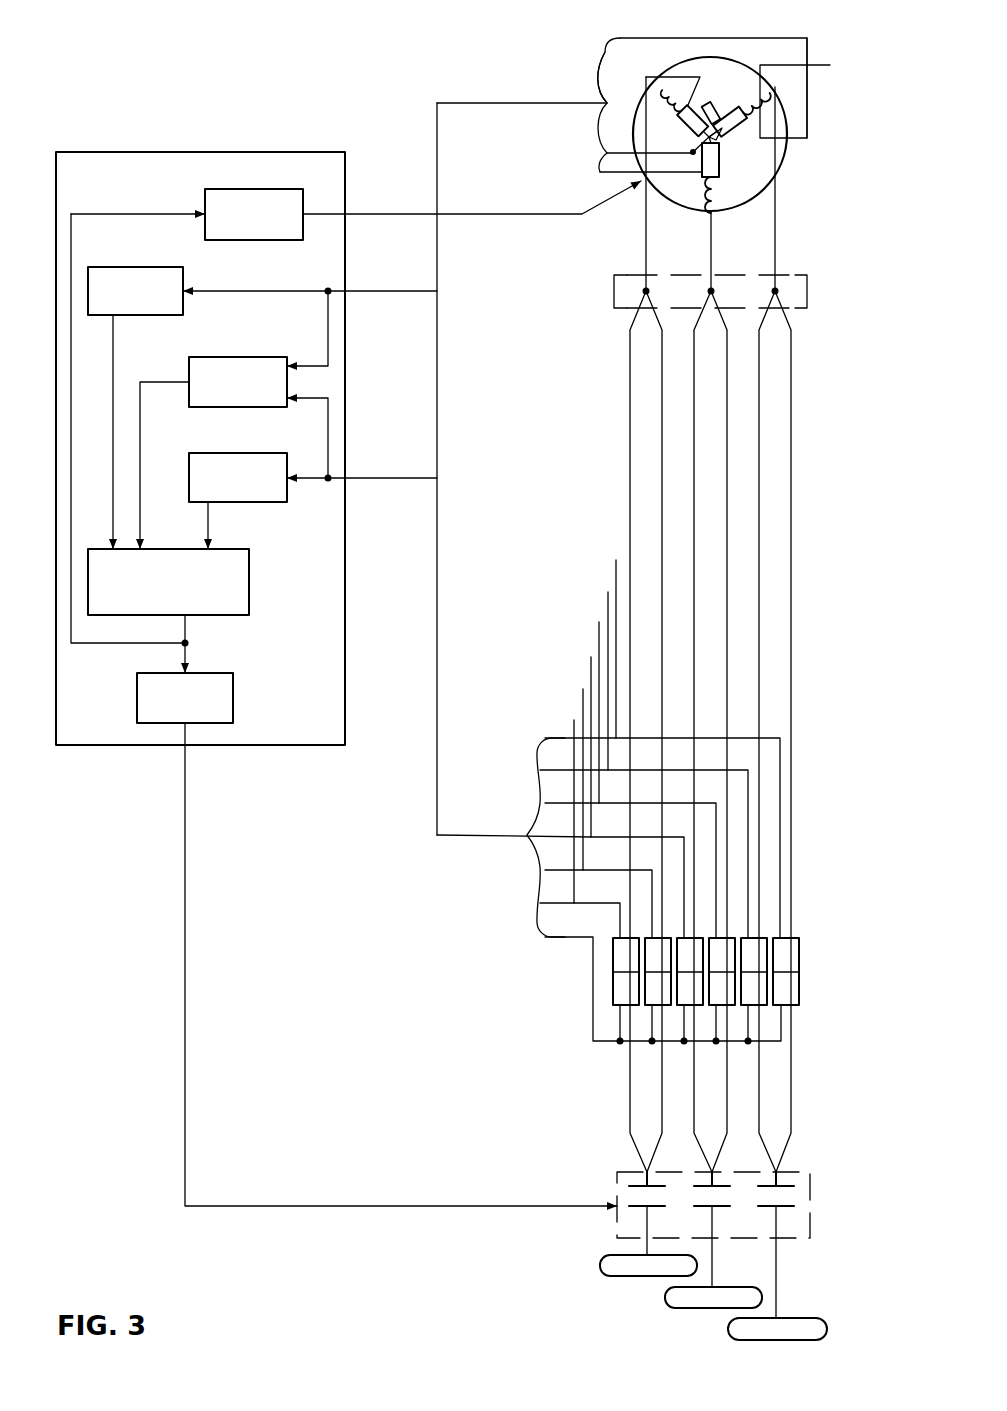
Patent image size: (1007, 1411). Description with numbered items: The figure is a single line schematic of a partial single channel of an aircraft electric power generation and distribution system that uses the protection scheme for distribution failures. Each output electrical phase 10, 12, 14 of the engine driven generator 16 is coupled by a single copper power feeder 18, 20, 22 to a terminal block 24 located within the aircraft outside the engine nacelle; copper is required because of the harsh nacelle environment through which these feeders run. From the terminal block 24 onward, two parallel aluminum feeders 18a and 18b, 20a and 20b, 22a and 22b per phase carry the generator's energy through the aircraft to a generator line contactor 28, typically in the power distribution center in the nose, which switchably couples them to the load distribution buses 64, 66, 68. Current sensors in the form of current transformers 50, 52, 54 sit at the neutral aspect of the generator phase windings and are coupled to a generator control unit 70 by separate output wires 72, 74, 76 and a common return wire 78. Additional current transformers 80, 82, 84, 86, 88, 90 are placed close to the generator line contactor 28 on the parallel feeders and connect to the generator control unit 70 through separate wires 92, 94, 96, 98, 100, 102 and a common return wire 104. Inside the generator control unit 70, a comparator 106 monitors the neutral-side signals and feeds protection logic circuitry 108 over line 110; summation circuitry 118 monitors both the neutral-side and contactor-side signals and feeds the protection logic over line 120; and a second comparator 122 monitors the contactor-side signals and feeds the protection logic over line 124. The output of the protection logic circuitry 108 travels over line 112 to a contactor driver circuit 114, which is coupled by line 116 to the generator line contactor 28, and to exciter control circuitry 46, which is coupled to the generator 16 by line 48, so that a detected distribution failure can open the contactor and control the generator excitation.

The output electrical phase 10 is at (651, 436).
The output electrical phase 12 is at (702, 107).
The output electrical phase 14 is at (785, 202).
The engine driven generator 16 is at (830, 143).
The copper power feeder 18 is at (640, 250).
The copper power feeder 20 is at (705, 250).
The copper power feeder 22 is at (780, 250).
The terminal block 24 is at (812, 292).
The generator line contactor 28 is at (813, 1190).
The exciter control circuitry 46 is at (193, 201).
The line 48 is at (472, 194).
The current transformer 50 is at (763, 72).
The current transformer 52 is at (715, 79).
The current transformer 54 is at (783, 166).
The load distribution bus 64 is at (630, 1254).
The load distribution bus 66 is at (694, 1270).
The load distribution bus 68 is at (799, 1273).
The generator control unit 70 is at (200, 433).
The separate output wire 72 is at (812, 103).
The separate output wire 74 is at (587, 72).
The separate output wire 76 is at (627, 163).
The common return wire 78 is at (622, 134).
The current transformer 80 is at (741, 889).
The current transformer 82 is at (757, 905).
The current transformer 84 is at (773, 921).
The current transformer 86 is at (789, 937).
The current transformer 88 is at (805, 954).
The current transformer 90 is at (821, 952).
The separate wire 92 is at (574, 720).
The separate wire 94 is at (583, 689).
The separate wire 96 is at (591, 657).
The separate wire 98 is at (599, 622).
The separate wire 100 is at (608, 592).
The separate wire 102 is at (616, 560).
The common return wire 104 is at (655, 1015).
The comparator 106 is at (262, 273).
The protection logic circuitry 108 is at (255, 587).
The line 110 is at (118, 338).
The line 112 is at (190, 652).
The contactor driver circuit 114 is at (237, 693).
The line 116 is at (190, 980).
The summation circuitry 118 is at (259, 384).
The line 120 is at (150, 430).
The comparator 122 is at (313, 460).
The line 124 is at (215, 525).
The parallel aluminum feeder 18a is at (620, 422).
The parallel aluminum feeder 18b is at (656, 462).
The parallel aluminum feeder 20a is at (687, 502).
The parallel aluminum feeder 20b is at (733, 497).
The parallel aluminum feeder 22a is at (765, 462).
The parallel aluminum feeder 22b is at (797, 422).